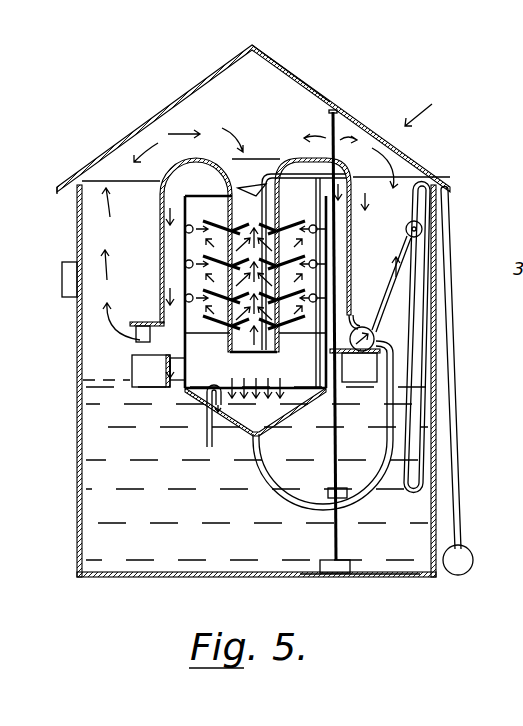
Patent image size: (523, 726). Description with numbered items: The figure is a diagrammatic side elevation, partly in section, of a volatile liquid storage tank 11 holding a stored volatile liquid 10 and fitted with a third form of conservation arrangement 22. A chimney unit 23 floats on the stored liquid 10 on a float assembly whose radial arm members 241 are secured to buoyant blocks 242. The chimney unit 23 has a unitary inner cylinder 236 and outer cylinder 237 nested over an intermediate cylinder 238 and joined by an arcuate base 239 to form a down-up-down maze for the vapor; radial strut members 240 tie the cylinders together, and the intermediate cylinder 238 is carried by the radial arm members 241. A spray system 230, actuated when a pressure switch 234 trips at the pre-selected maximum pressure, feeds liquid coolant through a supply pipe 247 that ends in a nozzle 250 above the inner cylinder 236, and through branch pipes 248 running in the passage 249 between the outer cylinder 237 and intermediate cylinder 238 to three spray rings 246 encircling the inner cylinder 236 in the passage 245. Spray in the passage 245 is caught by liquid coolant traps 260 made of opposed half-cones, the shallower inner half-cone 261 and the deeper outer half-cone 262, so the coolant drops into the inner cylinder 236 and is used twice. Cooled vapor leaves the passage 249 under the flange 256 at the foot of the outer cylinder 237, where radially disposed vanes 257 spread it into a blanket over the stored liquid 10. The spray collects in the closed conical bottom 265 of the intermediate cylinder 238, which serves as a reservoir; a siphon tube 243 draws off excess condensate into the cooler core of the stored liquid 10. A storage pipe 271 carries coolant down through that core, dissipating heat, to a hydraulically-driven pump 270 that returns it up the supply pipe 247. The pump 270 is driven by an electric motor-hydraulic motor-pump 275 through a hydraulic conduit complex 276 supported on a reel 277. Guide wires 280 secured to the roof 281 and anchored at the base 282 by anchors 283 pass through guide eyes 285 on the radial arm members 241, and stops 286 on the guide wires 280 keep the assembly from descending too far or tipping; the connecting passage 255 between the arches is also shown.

The stored volatile liquid 10 is at (80, 381).
The tank 11 is at (429, 106).
The conservation arrangement 22 is at (241, 444).
The chimney unit 23 is at (215, 242).
The spray system 230 is at (203, 130).
The pressure switch 234 is at (66, 285).
The inner cylinder 236 is at (222, 365).
The outer cylinder 237 is at (168, 238).
The intermediate cylinder 238 is at (186, 265).
The arcuate base 239 is at (200, 160).
The radial strut members 240 is at (225, 352).
The radial arm members 241 is at (140, 354).
The buoyant blocks 242 is at (132, 380).
The siphon tube 243 is at (207, 438).
The passage 245 is at (207, 192).
The liquid coolant spray rings 246 is at (322, 225).
The liquid coolant supply pipe 247 is at (335, 243).
The branch pipes 248 is at (335, 261).
The passage 249 is at (353, 183).
The nozzle 250 is at (262, 174).
The connecting passage 255 is at (288, 158).
The flange 256 is at (147, 321).
The vanes 257 is at (136, 334).
The liquid coolant traps 260 is at (310, 200).
The inner half-cone 261 is at (232, 196).
The outer half-cone 262 is at (186, 242).
The conical bottom 265 is at (270, 420).
The pump 270 is at (377, 336).
The storage pipe 271 is at (300, 510).
The electric motor-hydraulic motor-pump 275 is at (473, 558).
The hydraulic conduit complex 276 is at (458, 484).
The reel 277 is at (423, 229).
The guide wires 280 is at (339, 516).
The roof 281 is at (290, 73).
The base 282 is at (373, 578).
The anchors 283 is at (350, 563).
The guide eyes 285 is at (347, 384).
The stops 286 is at (330, 489).